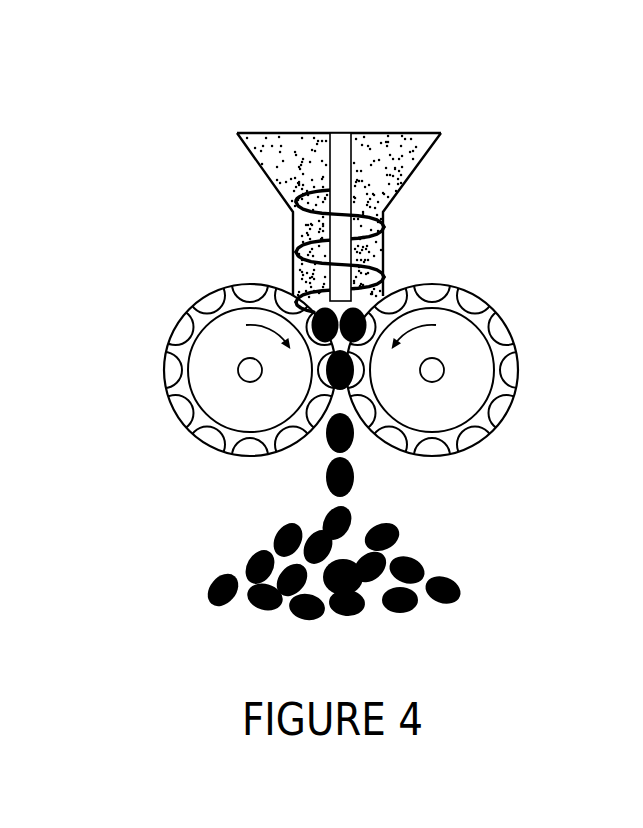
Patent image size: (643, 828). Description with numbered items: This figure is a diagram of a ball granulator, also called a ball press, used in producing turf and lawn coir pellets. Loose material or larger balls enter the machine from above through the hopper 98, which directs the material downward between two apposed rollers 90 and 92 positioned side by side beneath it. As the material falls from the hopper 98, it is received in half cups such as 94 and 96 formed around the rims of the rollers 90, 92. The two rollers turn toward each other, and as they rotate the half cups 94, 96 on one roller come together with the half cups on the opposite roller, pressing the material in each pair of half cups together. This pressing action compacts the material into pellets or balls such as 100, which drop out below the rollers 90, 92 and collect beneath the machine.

The roller 90 is at (508, 372).
The roller 92 is at (167, 340).
The half cup 94 is at (494, 308).
The half cup 96 is at (207, 303).
The hopper 98 is at (405, 152).
The pellet or ball 100 is at (358, 482).